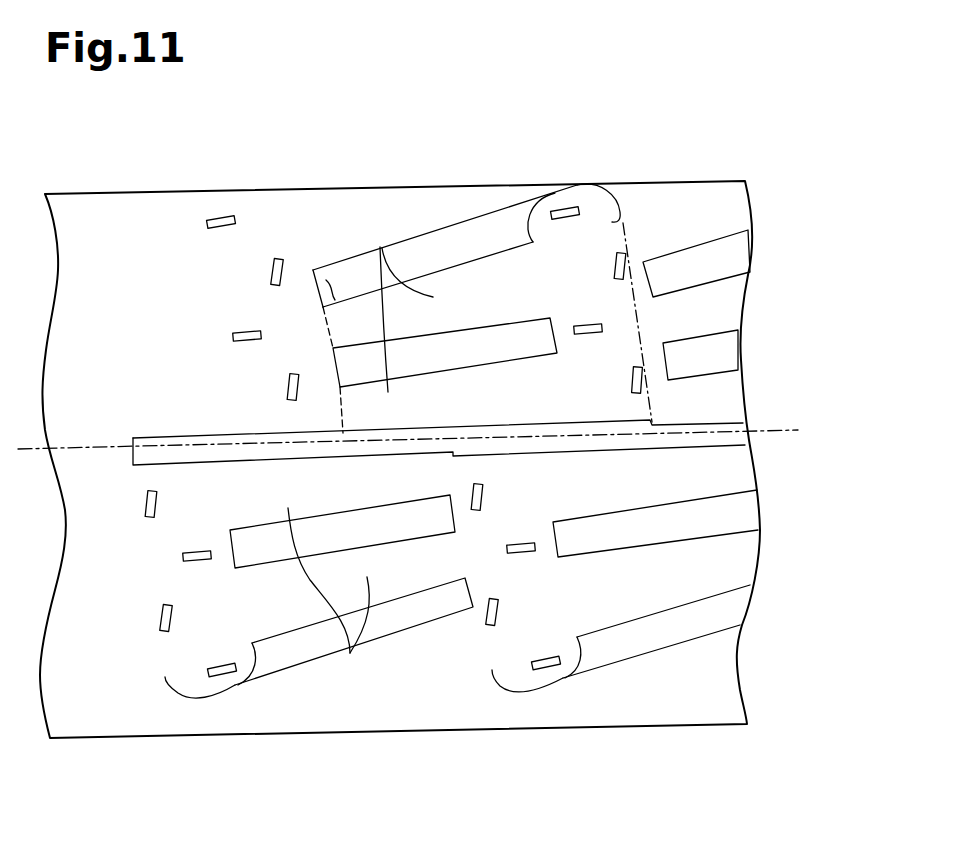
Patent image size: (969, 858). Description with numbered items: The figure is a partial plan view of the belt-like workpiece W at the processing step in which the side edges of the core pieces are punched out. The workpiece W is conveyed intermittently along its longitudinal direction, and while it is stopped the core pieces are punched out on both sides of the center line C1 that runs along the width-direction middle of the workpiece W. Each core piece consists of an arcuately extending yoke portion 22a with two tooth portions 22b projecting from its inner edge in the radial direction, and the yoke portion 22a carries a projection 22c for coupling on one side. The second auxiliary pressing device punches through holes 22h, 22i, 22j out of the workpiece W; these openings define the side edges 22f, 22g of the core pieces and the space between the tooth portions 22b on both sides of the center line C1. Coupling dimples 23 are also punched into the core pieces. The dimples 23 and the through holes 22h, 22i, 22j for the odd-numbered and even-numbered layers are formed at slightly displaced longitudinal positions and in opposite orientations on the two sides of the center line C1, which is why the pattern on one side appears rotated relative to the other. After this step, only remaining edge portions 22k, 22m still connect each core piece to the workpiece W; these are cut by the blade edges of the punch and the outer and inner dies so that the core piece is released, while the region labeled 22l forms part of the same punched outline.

The workpiece W is at (127, 192).
The center line C1 is at (772, 433).
The yoke portion 22a is at (625, 221).
The tooth portion 22b is at (382, 248).
The projection for coupling 22c is at (565, 188).
The side edge 22f is at (317, 270).
The side edge 22g is at (464, 427).
The through hole 22h is at (446, 229).
The through hole 22i is at (487, 328).
The through hole 22j is at (756, 445).
The remaining edge portion 22k is at (324, 312).
The opening 22l is at (710, 336).
The remaining edge portion 22m is at (632, 241).
The coupling dimple 23 is at (268, 270).